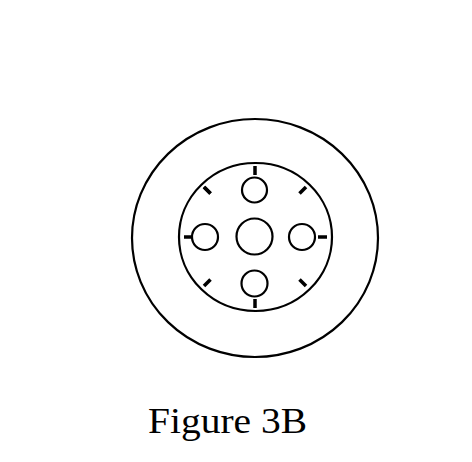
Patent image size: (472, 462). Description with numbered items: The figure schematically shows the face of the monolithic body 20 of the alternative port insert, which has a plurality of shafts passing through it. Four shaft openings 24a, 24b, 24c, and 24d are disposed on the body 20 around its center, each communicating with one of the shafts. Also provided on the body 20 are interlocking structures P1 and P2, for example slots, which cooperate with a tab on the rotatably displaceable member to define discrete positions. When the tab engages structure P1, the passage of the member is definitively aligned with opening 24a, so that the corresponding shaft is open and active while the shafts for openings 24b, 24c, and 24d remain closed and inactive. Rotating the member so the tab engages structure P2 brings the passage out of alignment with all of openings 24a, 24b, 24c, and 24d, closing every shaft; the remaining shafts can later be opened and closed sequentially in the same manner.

The body 20 is at (304, 104).
The shaft opening 24a is at (256, 188).
The shaft opening 24b is at (302, 239).
The shaft opening 24c is at (248, 283).
The shaft opening 24d is at (204, 235).
The interlocking structure P1 is at (255, 188).
The interlocking structure P2 is at (303, 191).